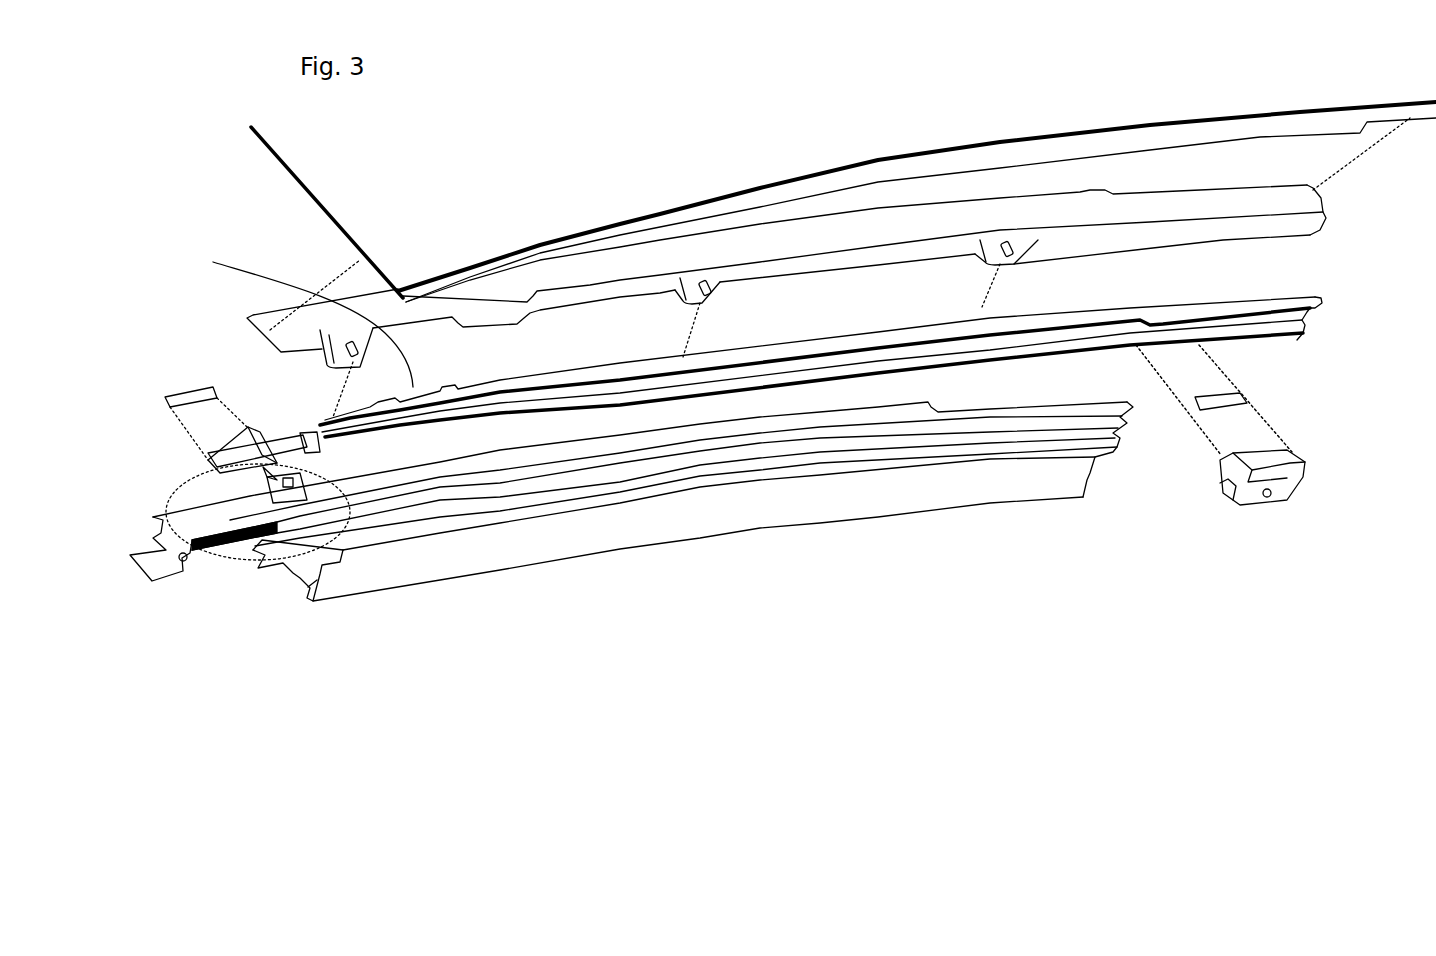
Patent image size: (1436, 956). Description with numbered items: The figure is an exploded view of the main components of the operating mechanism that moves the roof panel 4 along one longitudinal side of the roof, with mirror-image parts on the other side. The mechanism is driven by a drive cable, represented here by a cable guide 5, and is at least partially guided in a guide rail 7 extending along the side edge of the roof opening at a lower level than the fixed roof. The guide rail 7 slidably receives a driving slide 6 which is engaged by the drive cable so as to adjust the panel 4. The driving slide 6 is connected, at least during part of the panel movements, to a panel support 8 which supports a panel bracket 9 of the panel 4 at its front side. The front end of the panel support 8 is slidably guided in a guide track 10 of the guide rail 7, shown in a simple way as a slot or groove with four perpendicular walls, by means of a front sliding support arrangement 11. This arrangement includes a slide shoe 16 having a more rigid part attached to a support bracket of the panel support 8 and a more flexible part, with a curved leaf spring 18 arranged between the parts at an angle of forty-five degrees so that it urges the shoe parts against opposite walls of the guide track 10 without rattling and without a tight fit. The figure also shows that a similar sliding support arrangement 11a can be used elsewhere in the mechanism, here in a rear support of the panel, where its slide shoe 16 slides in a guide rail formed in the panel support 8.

The panel 4 is at (836, 109).
The cable guide 5 is at (187, 573).
The driving slide 6 is at (302, 310).
The guide rail 7 is at (356, 604).
The panel support 8 is at (1321, 297).
The panel bracket 9 is at (1328, 206).
The guide track 10 is at (310, 578).
The front sliding support arrangement 11 is at (207, 457).
The sliding support arrangement 11a is at (1313, 457).
The slide shoe 16 is at (1247, 403).
The spring 18 is at (197, 387).